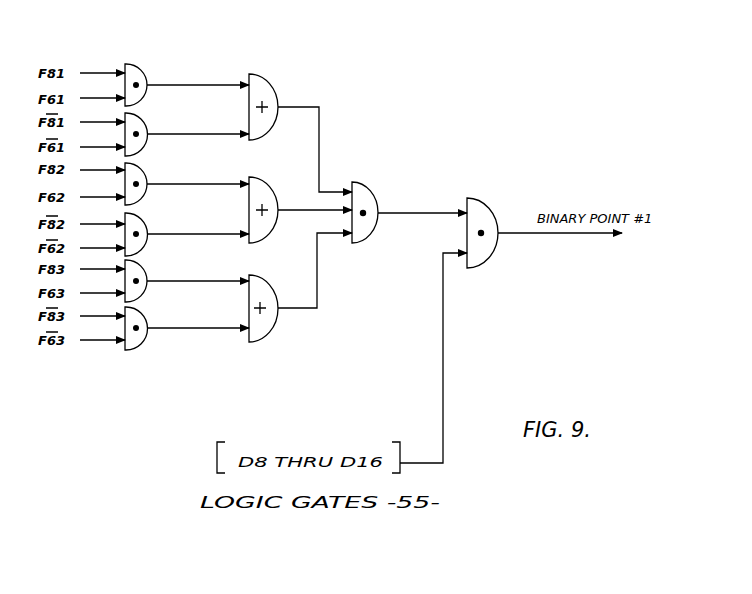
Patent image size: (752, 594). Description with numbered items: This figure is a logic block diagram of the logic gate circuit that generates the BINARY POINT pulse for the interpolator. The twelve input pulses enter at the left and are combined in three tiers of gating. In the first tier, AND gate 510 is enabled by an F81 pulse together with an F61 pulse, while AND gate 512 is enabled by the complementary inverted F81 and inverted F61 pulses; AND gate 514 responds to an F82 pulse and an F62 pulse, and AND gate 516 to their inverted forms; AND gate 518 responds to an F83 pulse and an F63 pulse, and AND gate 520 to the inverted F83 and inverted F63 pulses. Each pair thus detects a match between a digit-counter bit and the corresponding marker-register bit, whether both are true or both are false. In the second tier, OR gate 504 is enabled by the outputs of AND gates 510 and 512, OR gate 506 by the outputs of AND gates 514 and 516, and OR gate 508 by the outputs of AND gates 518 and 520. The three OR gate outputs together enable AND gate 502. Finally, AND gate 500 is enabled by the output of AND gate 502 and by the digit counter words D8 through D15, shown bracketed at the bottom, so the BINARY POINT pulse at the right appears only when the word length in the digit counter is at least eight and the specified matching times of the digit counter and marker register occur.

The AND gate 500 is at (473, 212).
The AND gate 502 is at (368, 197).
The OR gate 504 is at (265, 86).
The OR gate 506 is at (265, 188).
The OR gate 508 is at (262, 288).
The AND gate 510 is at (136, 75).
The AND gate 512 is at (136, 125).
The AND gate 514 is at (136, 176).
The AND gate 516 is at (136, 224).
The AND gate 518 is at (136, 271).
The AND gate 520 is at (136, 319).